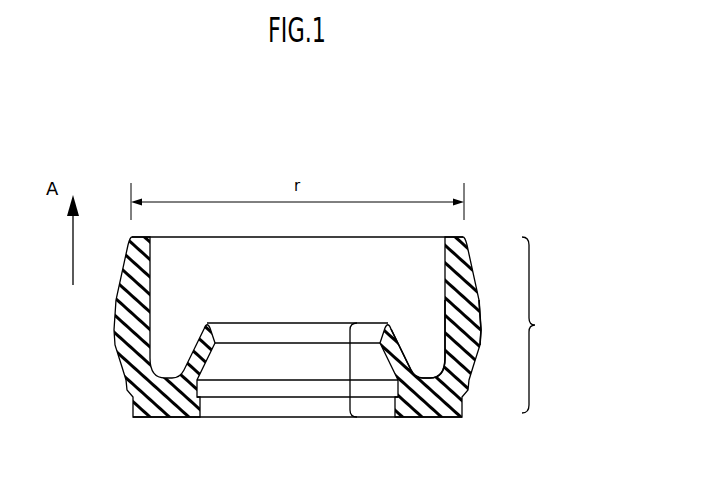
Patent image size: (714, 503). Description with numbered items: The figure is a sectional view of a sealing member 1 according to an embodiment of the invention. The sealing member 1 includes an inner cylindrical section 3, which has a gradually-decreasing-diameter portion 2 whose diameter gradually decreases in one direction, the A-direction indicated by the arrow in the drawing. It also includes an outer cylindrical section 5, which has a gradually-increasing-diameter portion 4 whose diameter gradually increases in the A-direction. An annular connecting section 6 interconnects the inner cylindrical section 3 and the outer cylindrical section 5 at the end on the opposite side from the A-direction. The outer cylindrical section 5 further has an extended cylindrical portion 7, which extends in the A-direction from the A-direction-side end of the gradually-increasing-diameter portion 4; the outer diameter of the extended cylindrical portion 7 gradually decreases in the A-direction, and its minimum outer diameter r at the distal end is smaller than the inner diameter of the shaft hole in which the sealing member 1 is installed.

The sealing member 1 is at (461, 106).
The gradually-decreasing-diameter portion 2 is at (405, 338).
The inner cylindrical section 3 is at (348, 368).
The gradually-increasing-diameter portion 4 is at (473, 357).
The outer cylindrical section 5 is at (539, 325).
The annular connecting section 6 is at (437, 418).
The extended cylindrical portion 7 is at (468, 259).